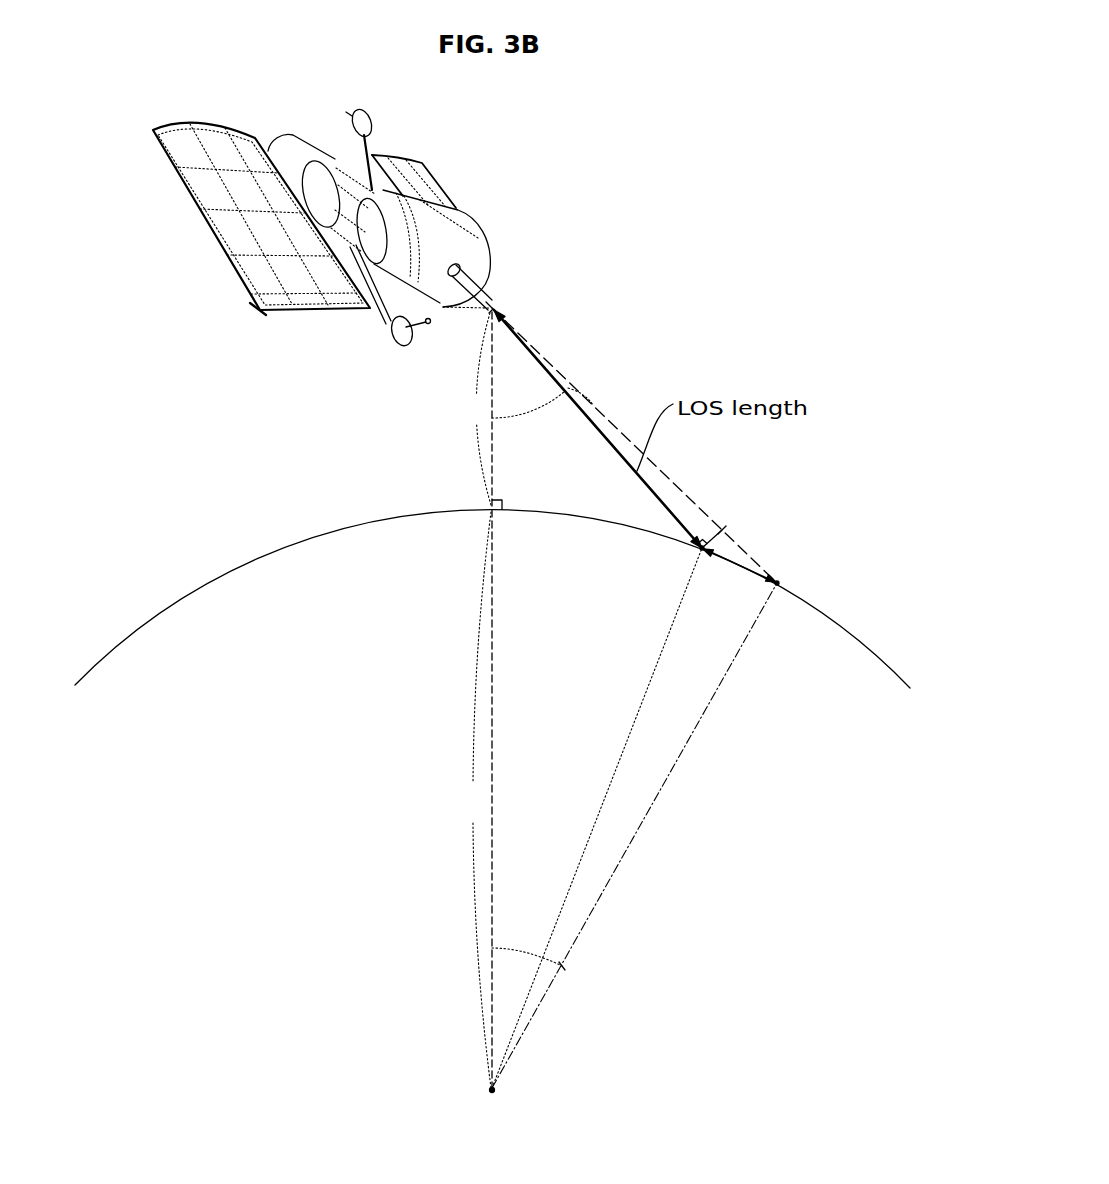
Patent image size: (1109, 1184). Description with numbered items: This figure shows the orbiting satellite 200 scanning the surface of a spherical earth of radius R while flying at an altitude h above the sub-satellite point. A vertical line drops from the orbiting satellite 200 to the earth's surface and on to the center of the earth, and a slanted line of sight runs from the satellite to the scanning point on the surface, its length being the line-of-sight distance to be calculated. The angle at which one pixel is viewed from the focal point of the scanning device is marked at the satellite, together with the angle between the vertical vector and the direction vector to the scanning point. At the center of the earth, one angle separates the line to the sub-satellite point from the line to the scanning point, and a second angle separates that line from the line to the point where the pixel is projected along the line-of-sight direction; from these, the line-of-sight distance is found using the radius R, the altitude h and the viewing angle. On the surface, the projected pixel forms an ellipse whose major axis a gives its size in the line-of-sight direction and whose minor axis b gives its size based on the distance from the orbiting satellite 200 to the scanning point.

The orbiting satellite 200 is at (447, 212).
The altitude h is at (479, 409).
The radius R is at (478, 800).
The major axis a is at (775, 583).
The minor axis b is at (714, 540).